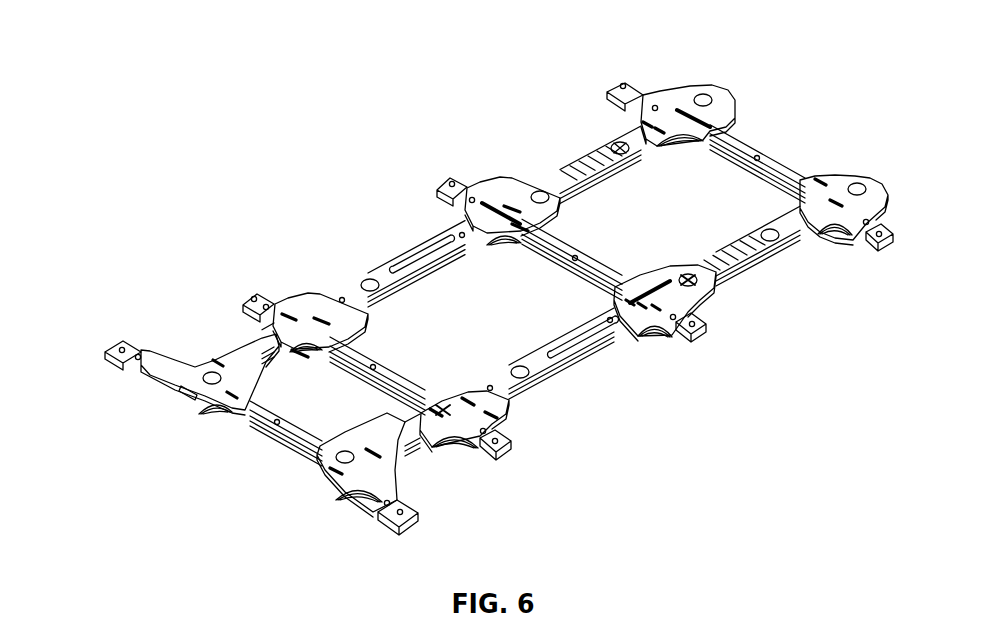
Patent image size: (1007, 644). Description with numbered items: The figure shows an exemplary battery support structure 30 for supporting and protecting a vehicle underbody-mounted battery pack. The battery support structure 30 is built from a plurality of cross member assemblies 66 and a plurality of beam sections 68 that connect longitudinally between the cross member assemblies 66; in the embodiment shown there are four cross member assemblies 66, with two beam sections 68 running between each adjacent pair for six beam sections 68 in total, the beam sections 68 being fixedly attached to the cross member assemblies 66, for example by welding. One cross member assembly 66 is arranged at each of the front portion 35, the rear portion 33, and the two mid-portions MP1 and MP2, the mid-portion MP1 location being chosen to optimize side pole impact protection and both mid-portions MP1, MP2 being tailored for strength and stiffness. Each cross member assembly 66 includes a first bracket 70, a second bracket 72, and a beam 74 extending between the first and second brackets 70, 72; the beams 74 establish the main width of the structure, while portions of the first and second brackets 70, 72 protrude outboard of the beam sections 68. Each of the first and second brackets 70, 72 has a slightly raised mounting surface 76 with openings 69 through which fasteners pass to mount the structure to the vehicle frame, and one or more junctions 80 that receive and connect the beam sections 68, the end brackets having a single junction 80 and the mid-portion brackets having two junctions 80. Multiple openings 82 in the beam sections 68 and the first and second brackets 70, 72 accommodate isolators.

The battery support structure 30 is at (683, 88).
The rear portion 33 is at (884, 255).
The front portion 35 is at (414, 533).
The cross member assembly 66 is at (727, 170).
The beam section 68 is at (575, 150).
The opening 69 is at (624, 85).
The first bracket 70 is at (659, 93).
The second bracket 72 is at (850, 178).
The beam 74 is at (745, 148).
The mounting surface 76 is at (637, 88).
The junction 80 is at (690, 110).
The opening 82 is at (712, 98).
The mid-portion MP1 is at (505, 457).
The mid-portion MP2 is at (705, 347).